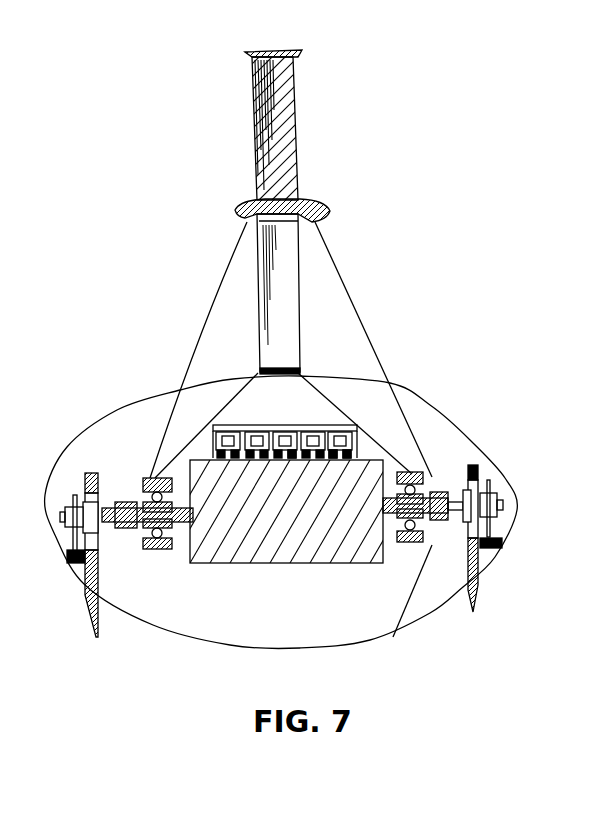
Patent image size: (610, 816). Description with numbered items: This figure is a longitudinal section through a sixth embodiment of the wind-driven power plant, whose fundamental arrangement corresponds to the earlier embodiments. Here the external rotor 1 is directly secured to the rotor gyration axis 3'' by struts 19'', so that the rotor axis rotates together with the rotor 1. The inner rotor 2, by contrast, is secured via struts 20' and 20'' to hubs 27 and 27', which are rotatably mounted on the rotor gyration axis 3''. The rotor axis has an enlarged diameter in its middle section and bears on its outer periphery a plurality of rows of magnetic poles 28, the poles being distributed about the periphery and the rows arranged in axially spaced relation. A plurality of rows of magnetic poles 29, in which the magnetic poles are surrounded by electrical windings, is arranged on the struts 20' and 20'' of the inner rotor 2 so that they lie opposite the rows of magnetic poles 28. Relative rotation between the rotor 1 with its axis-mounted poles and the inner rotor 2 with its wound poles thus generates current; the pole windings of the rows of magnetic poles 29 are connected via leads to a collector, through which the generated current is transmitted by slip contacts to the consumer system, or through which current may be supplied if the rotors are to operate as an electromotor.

The rotor 1 is at (287, 145).
The inner rotor 2 is at (282, 298).
The struts 19'' is at (389, 349).
The strut 20' is at (355, 423).
The strut 20'' is at (206, 425).
The hub 27 is at (132, 491).
The hub 27' is at (456, 448).
The rows of magnetic poles 28 is at (344, 458).
The rows of magnetic poles 29 is at (240, 449).
The rotor gyration axis 3'' is at (526, 522).